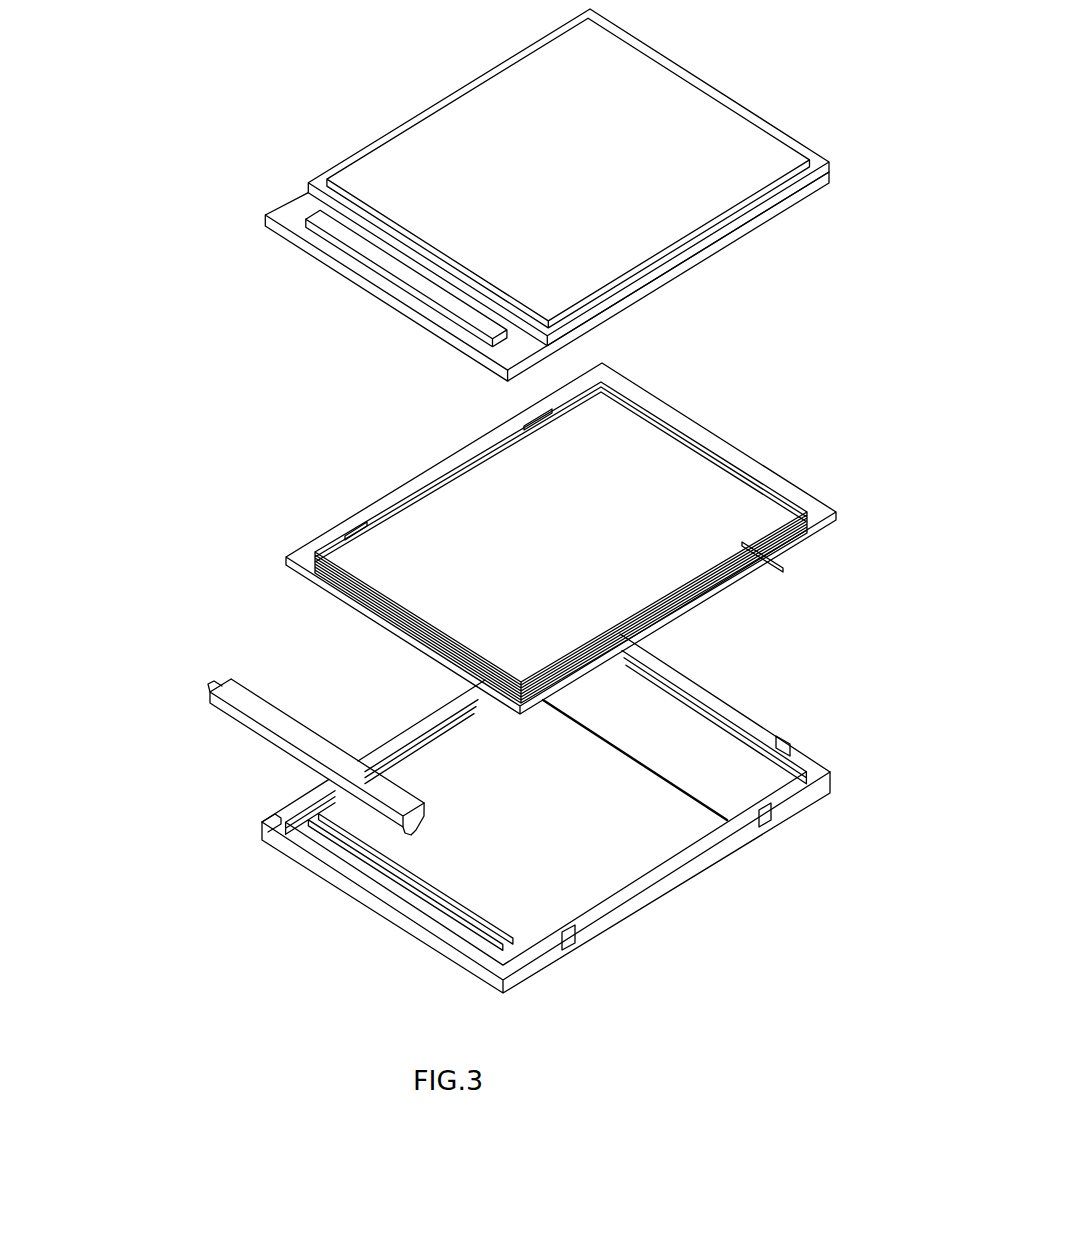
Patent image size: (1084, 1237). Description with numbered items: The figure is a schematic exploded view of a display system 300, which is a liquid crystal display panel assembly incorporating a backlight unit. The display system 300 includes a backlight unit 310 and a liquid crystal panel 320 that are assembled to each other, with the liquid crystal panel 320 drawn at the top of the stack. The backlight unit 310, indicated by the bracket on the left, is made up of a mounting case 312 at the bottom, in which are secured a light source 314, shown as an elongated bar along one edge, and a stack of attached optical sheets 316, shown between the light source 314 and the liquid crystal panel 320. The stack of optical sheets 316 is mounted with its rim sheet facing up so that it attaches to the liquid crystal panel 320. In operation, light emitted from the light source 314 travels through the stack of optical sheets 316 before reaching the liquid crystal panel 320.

The display system 300 is at (359, 97).
The liquid crystal panel 320 is at (761, 53).
The backlight unit 310 is at (185, 366).
The stack of attached optical sheets 316 is at (761, 372).
The light source 314 is at (252, 702).
The mounting case 312 is at (793, 813).